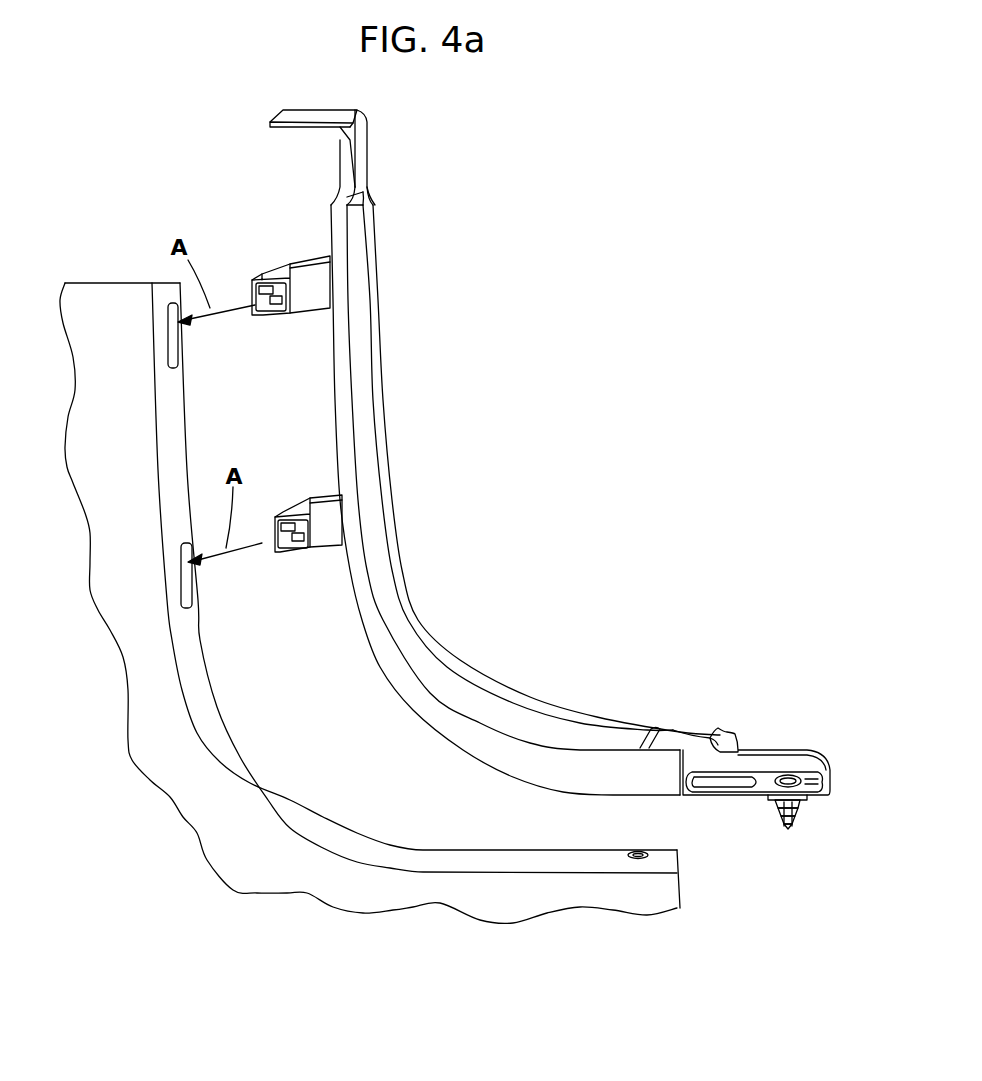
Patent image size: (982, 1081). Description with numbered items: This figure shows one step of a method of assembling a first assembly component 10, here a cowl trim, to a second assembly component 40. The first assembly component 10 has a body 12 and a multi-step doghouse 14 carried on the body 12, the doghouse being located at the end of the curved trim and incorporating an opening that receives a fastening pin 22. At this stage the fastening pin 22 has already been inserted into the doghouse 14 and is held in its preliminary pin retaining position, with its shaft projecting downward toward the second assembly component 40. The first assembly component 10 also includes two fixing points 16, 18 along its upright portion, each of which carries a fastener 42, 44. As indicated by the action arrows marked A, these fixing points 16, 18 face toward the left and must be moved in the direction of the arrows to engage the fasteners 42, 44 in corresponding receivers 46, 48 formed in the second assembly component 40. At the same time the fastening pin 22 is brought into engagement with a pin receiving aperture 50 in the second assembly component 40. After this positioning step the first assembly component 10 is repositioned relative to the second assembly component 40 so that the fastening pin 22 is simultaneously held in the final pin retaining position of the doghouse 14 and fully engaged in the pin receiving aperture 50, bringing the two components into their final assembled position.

The assembly component 10 is at (597, 232).
The body 12 is at (413, 620).
The multi-step doghouse 14 is at (795, 733).
The first fixing point 16 is at (262, 328).
The second fixing point 18 is at (287, 568).
The fastening pin 22 is at (788, 830).
The second assembly component 40 is at (120, 290).
The fastener 42 is at (268, 272).
The fastener 44 is at (292, 512).
The receiver 46 is at (165, 344).
The receiver 48 is at (165, 588).
The pin receiving aperture 50 is at (633, 848).